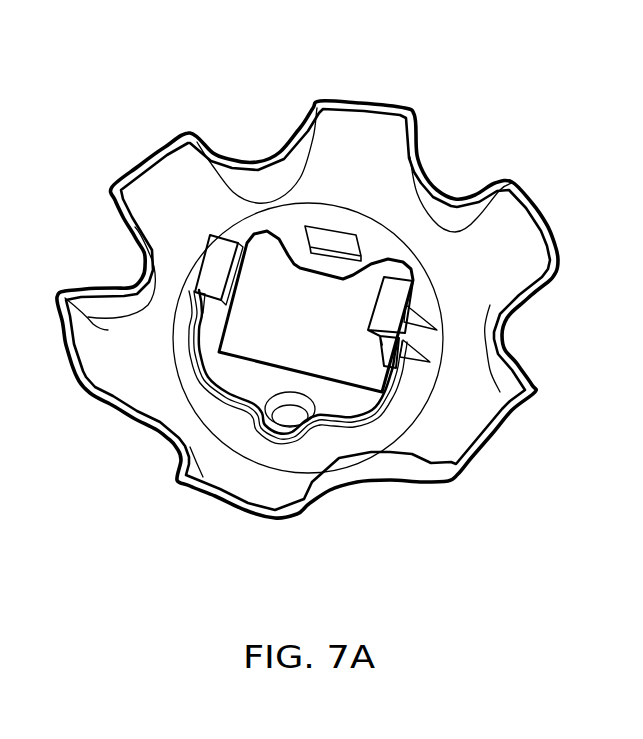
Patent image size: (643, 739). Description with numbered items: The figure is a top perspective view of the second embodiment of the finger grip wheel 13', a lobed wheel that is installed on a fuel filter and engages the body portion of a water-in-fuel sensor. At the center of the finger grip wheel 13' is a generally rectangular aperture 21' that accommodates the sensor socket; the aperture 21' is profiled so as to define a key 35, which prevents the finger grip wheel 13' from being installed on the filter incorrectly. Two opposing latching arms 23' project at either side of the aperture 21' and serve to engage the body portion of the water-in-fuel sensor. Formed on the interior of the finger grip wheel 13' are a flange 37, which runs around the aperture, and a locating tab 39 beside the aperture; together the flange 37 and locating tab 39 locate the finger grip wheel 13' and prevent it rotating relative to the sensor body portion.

The finger grip wheel 13' is at (350, 309).
The aperture 21' is at (311, 215).
The latching arms 23' is at (321, 283).
The key 35 is at (338, 270).
The flange 37 is at (353, 430).
The locating tab 39 is at (327, 232).